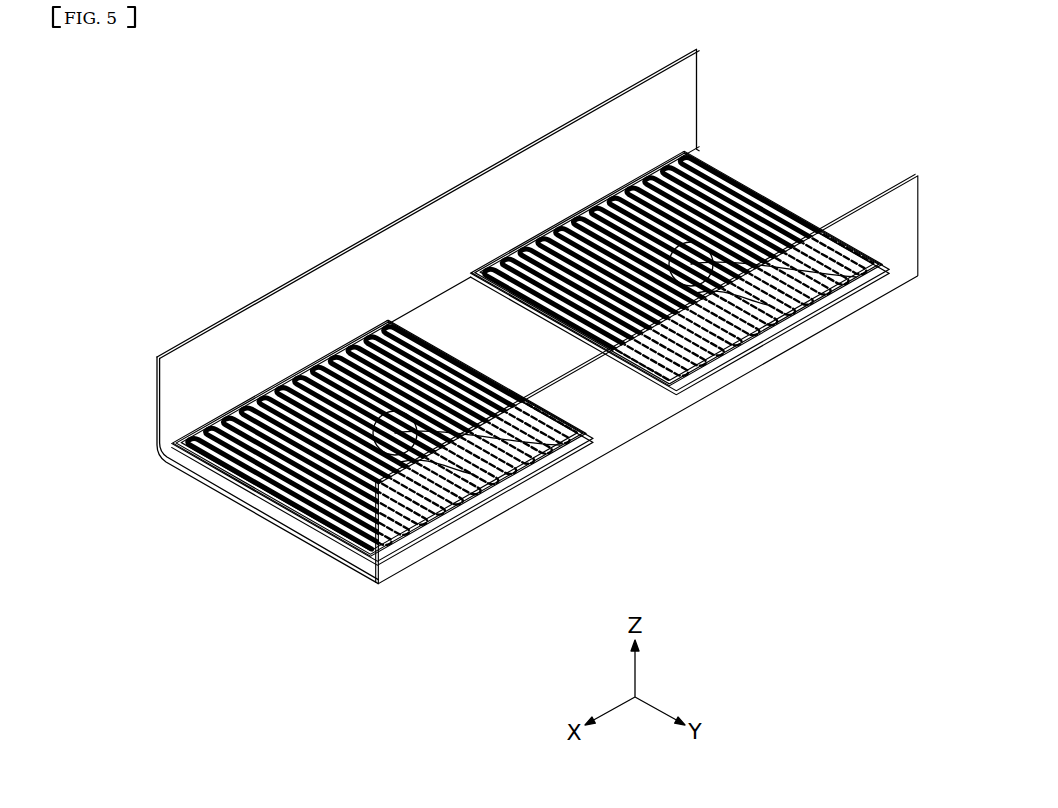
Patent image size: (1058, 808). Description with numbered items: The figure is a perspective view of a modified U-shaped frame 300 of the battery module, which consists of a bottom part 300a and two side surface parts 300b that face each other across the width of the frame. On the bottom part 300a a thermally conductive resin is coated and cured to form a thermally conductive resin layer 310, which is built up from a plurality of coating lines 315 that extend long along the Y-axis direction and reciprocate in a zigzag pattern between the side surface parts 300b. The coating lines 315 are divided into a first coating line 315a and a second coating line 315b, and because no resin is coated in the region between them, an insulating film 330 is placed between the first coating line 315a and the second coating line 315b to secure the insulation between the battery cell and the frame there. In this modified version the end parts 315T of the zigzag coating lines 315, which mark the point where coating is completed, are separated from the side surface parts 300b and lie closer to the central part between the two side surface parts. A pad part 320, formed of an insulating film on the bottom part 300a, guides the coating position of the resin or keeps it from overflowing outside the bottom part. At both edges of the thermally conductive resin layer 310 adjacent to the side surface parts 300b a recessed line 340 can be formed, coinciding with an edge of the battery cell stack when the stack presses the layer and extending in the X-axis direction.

The U-shaped frame 300 is at (538, 428).
The bottom part 300a is at (327, 557).
The side surface parts 300b is at (452, 548).
The thermally conductive resin layer 310 is at (698, 172).
The coating lines 315 is at (531, 321).
The first coating line 315a is at (280, 393).
The second coating line 315b is at (632, 187).
The end part 315T is at (493, 500).
The pad part 320 is at (760, 203).
The insulating film 330 is at (452, 308).
The recessed line 340 is at (520, 250).